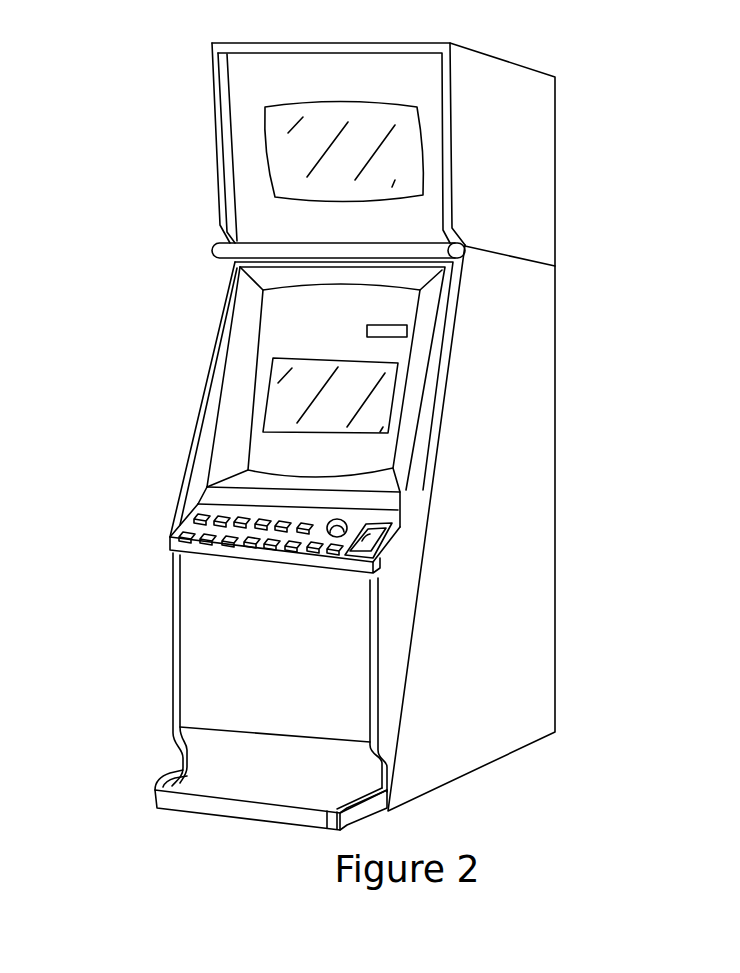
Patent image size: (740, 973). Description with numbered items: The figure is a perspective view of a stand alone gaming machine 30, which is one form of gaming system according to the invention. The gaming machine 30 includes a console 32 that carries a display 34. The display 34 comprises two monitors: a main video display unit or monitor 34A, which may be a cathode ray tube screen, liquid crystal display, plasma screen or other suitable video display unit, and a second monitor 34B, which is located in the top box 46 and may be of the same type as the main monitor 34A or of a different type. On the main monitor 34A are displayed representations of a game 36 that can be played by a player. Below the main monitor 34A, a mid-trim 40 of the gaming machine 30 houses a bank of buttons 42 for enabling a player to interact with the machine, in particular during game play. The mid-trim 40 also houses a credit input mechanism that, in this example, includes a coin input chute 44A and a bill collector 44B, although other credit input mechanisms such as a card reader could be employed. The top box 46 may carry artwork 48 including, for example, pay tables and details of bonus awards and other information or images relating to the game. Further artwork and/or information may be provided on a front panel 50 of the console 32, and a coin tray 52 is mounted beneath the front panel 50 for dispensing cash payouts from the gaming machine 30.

The gaming machine 30 is at (115, 57).
The console 32 is at (532, 665).
The display 34 is at (239, 348).
The main video display unit 34A is at (247, 422).
The second monitor 34B is at (422, 163).
The game 36 is at (397, 395).
The mid-trim 40 is at (168, 541).
The bank of buttons 42 is at (364, 506).
The coin input chute 44A is at (348, 519).
The bill collector 44B is at (384, 534).
The top box 46 is at (212, 115).
The artwork 48 is at (281, 66).
The front panel 50 is at (200, 673).
The coin tray 52 is at (150, 798).